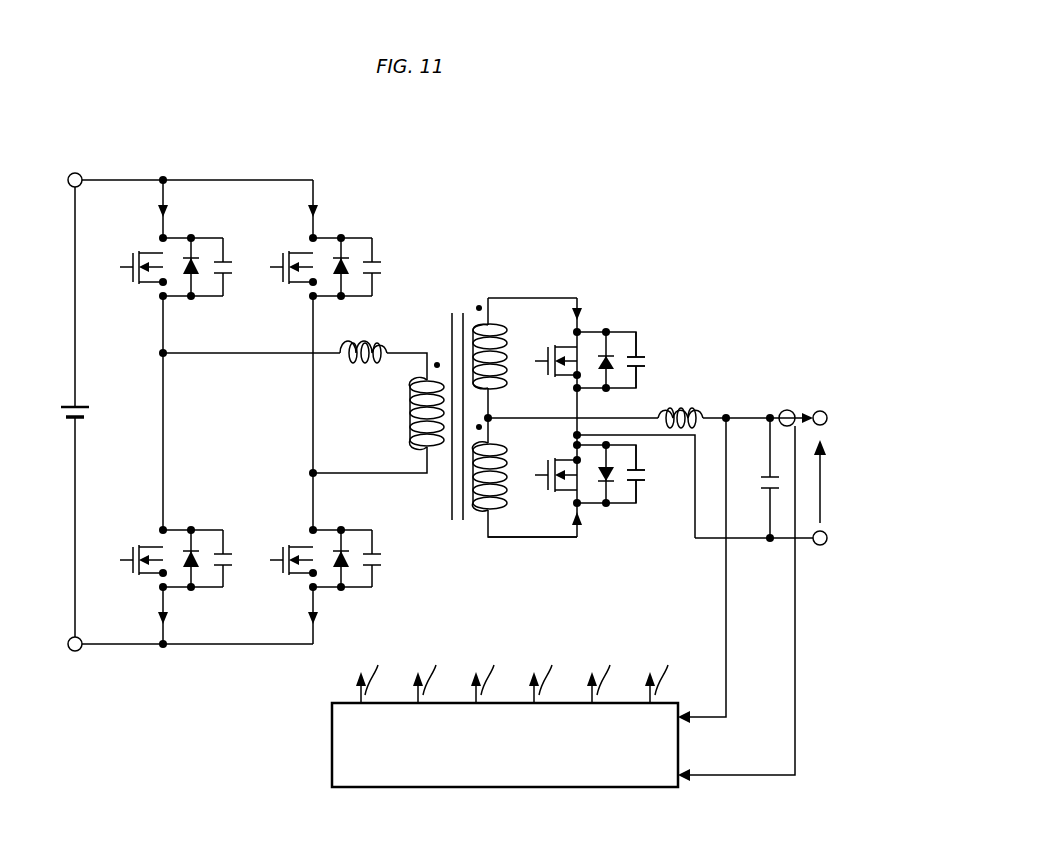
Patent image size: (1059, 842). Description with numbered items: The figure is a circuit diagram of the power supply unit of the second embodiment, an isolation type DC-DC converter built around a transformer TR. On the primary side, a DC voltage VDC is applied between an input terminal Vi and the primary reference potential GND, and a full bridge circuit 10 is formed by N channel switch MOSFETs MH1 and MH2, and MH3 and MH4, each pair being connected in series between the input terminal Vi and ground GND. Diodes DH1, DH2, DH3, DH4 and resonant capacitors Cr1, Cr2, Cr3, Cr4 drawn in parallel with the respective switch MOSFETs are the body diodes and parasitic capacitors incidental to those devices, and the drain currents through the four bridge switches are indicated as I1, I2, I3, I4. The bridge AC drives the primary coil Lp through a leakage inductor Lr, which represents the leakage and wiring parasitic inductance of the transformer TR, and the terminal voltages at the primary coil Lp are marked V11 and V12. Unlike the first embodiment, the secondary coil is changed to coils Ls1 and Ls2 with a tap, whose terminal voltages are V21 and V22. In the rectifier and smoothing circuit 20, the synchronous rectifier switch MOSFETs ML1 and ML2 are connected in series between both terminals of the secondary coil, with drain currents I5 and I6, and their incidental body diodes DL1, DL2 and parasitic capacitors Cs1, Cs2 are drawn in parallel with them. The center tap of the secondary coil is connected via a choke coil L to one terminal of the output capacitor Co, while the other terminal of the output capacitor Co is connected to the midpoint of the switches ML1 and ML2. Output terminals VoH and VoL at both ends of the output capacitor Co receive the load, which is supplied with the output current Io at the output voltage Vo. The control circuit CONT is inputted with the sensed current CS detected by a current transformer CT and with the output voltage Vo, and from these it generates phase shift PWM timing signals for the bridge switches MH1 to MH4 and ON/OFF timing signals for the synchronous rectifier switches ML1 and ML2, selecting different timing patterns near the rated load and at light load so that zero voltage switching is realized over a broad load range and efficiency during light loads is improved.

The input terminal Vi is at (72, 172).
The primary reference potential GND is at (75, 652).
The DC voltage VDC is at (73, 400).
The full bridge circuit 10 is at (237, 159).
The rectifier and smoothing circuit 20 is at (627, 195).
The drain current I1 is at (153, 205).
The drain current I2 is at (153, 615).
The drain current I3 is at (303, 205).
The drain current I4 is at (303, 615).
The switch MOSFET MH1 is at (136, 253).
The switch MOSFET MH2 is at (146, 547).
The switch MOSFET MH3 is at (287, 253).
The switch MOSFET MH4 is at (297, 547).
The diode DH1 is at (193, 255).
The diode DH2 is at (193, 548).
The diode DH3 is at (343, 256).
The diode DH4 is at (343, 548).
The resonant capacitor Cr1 is at (229, 285).
The resonant capacitor Cr2 is at (231, 575).
The resonant capacitor Cr3 is at (375, 265).
The resonant capacitor Cr4 is at (375, 558).
The terminal voltage V11 is at (163, 352).
The terminal voltage V12 is at (313, 472).
The leakage inductor Lr is at (360, 343).
The primary coil Lp is at (410, 425).
The transformer TR is at (457, 397).
The secondary coil Ls1 is at (508, 378).
The secondary coil Ls2 is at (508, 472).
The terminal voltage V21 is at (490, 297).
The terminal voltage V22 is at (488, 540).
The drain current I5 is at (586, 315).
The drain current I6 is at (586, 521).
The synchronous rectifier switch MOSFET ML1 is at (548, 348).
The synchronous rectifier switch MOSFET ML2 is at (548, 492).
The diode DL1 is at (608, 350).
The diode DL2 is at (608, 490).
The capacitor Cs1 is at (642, 352).
The capacitor Cs2 is at (640, 485).
The choke coil L is at (688, 405).
The current transformer CT is at (785, 409).
The output current Io is at (804, 405).
The output terminal VoH is at (822, 411).
The output terminal VoL is at (822, 546).
The output voltage Vo is at (834, 481).
The output capacitor Co is at (766, 473).
The control circuit CONT is at (332, 737).
The sensed current CS is at (762, 775).